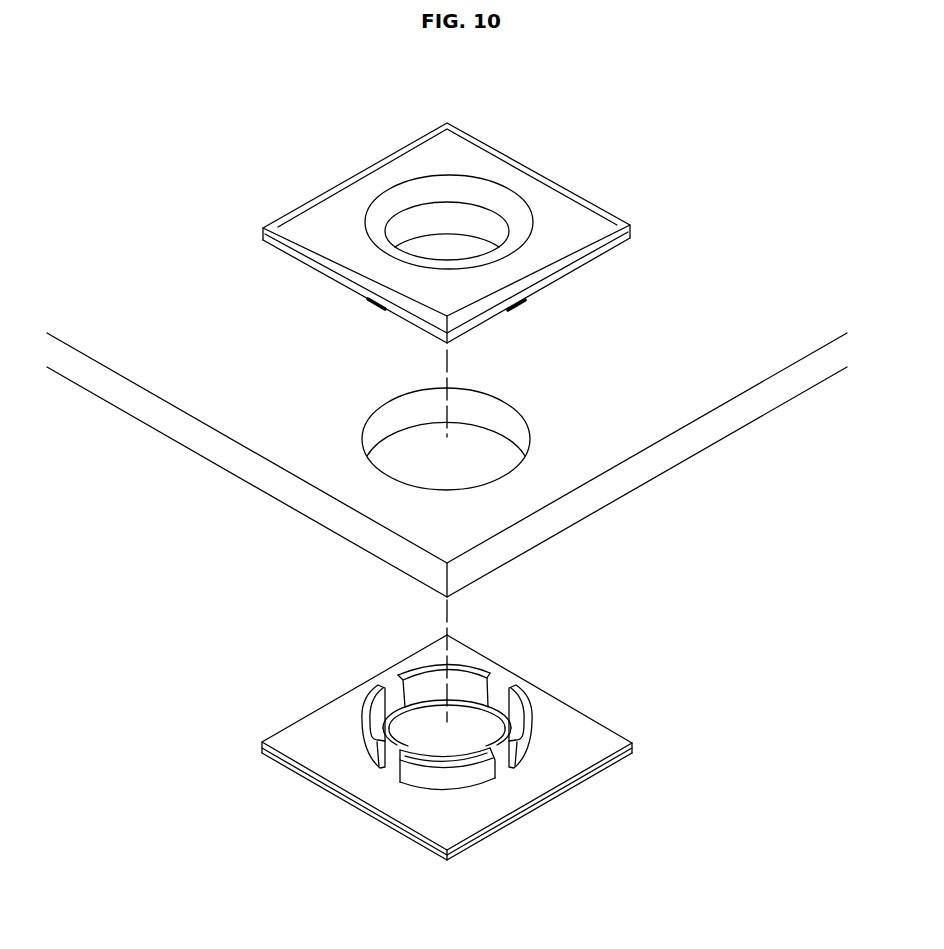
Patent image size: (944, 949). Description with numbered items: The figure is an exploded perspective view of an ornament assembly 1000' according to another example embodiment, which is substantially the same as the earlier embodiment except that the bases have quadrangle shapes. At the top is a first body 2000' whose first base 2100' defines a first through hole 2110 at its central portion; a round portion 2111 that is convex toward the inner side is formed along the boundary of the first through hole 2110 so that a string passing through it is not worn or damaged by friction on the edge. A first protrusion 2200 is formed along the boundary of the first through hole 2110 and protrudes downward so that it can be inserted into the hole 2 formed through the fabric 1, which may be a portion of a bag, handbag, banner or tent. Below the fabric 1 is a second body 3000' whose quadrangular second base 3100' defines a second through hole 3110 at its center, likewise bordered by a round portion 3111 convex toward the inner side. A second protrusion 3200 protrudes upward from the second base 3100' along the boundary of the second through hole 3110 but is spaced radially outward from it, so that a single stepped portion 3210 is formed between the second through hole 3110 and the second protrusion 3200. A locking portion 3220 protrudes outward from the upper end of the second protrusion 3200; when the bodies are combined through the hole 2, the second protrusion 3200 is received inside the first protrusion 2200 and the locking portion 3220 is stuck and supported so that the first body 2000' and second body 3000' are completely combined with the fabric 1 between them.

The ornament assembly 1000' is at (166, 94).
The first body 2000' is at (485, 208).
The first base 2100' is at (493, 219).
The first through hole 2110 is at (436, 252).
The round portion 2111 is at (520, 238).
The first protrusion 2200 is at (396, 248).
The fabric 1 is at (622, 413).
The hole 2 is at (435, 463).
The second body 3000' is at (465, 825).
The second base 3100' is at (426, 761).
The second through hole 3110 is at (428, 733).
The round portion 3111 is at (478, 722).
The second protrusion 3200 is at (528, 747).
The stepped portion 3210 is at (528, 714).
The locking portion 3220 is at (372, 695).